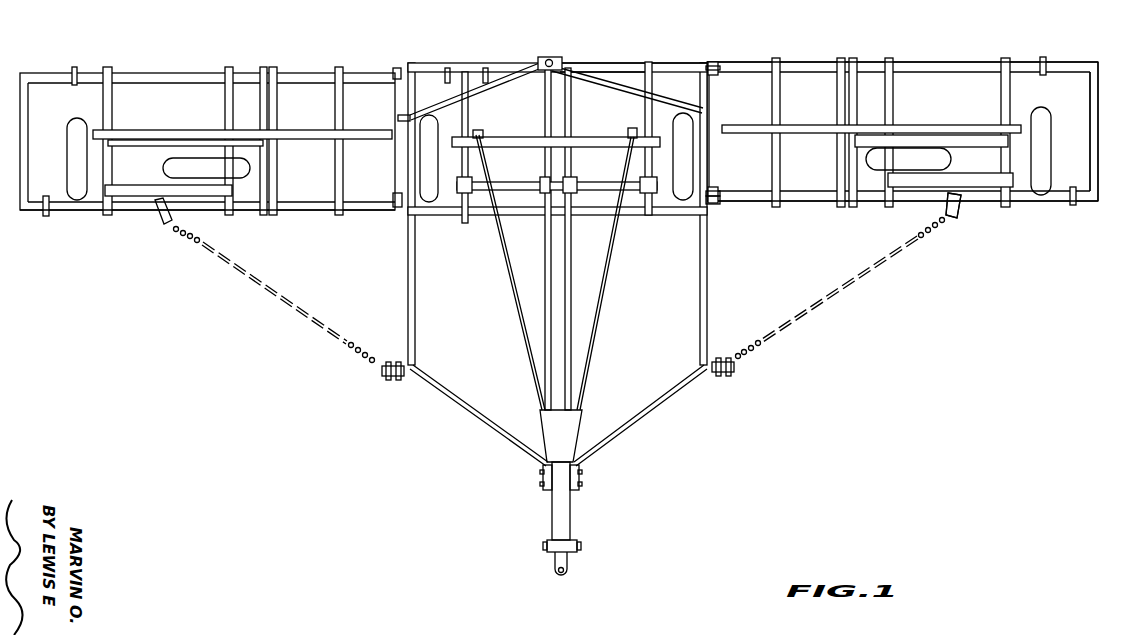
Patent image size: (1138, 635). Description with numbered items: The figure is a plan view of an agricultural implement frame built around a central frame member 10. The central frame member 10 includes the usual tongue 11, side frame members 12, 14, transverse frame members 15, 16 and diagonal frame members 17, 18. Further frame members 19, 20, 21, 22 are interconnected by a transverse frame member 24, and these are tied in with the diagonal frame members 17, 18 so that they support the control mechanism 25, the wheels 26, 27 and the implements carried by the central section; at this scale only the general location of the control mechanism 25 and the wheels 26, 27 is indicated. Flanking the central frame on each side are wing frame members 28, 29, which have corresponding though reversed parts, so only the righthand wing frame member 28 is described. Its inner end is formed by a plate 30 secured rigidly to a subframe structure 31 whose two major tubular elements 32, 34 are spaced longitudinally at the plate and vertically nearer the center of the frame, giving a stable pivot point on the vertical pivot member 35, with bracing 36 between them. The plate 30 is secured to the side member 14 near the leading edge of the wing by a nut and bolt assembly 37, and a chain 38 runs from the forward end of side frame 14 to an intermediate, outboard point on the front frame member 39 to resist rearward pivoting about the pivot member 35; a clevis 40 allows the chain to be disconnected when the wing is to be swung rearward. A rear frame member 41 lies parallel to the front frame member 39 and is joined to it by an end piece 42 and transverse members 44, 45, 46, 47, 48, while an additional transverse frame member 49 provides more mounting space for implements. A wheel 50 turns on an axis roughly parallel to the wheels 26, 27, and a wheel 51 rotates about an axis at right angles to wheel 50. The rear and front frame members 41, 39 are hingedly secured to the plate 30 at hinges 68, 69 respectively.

The central frame member 10 is at (622, 445).
The tongue 11 is at (555, 515).
The side frame member 12 is at (416, 280).
The side frame member 14 is at (700, 256).
The transverse frame member 15 is at (591, 212).
The transverse frame member 16 is at (557, 79).
The diagonal frame member 17 is at (517, 322).
The diagonal frame member 18 is at (597, 312).
The frame member 19 is at (468, 113).
The frame member 20 is at (545, 103).
The frame member 21 is at (571, 113).
The frame member 22 is at (645, 111).
The transverse frame member 24 is at (592, 139).
The control mechanism 25 is at (526, 178).
The wheel 26 is at (693, 147).
The wheel 27 is at (420, 157).
The wing frame member 28 is at (574, 159).
The wing frame member 29 is at (303, 218).
The plate 30 is at (707, 97).
The subframe structure 31 is at (635, 57).
The tubular member 32 is at (598, 62).
The tubular member 34 is at (601, 83).
The vertical pivot member 35 is at (554, 61).
The bracing 36 is at (672, 75).
The nut and bolt assembly 37 is at (716, 185).
The chain 38 is at (755, 362).
The front frame member 39 is at (757, 203).
The clevis 40 is at (948, 225).
The rear frame member 41 is at (943, 64).
The end piece 42 is at (1098, 122).
The transverse member 44 is at (1002, 92).
The transverse member 45 is at (893, 98).
The transverse member 46 is at (853, 92).
The transverse member 47 is at (838, 102).
The transverse member 48 is at (780, 101).
The additional transverse frame member 49 is at (806, 133).
The wheel 50 is at (1043, 145).
The wheel 51 is at (951, 158).
The hinge 68 is at (716, 207).
The hinge 69 is at (718, 60).